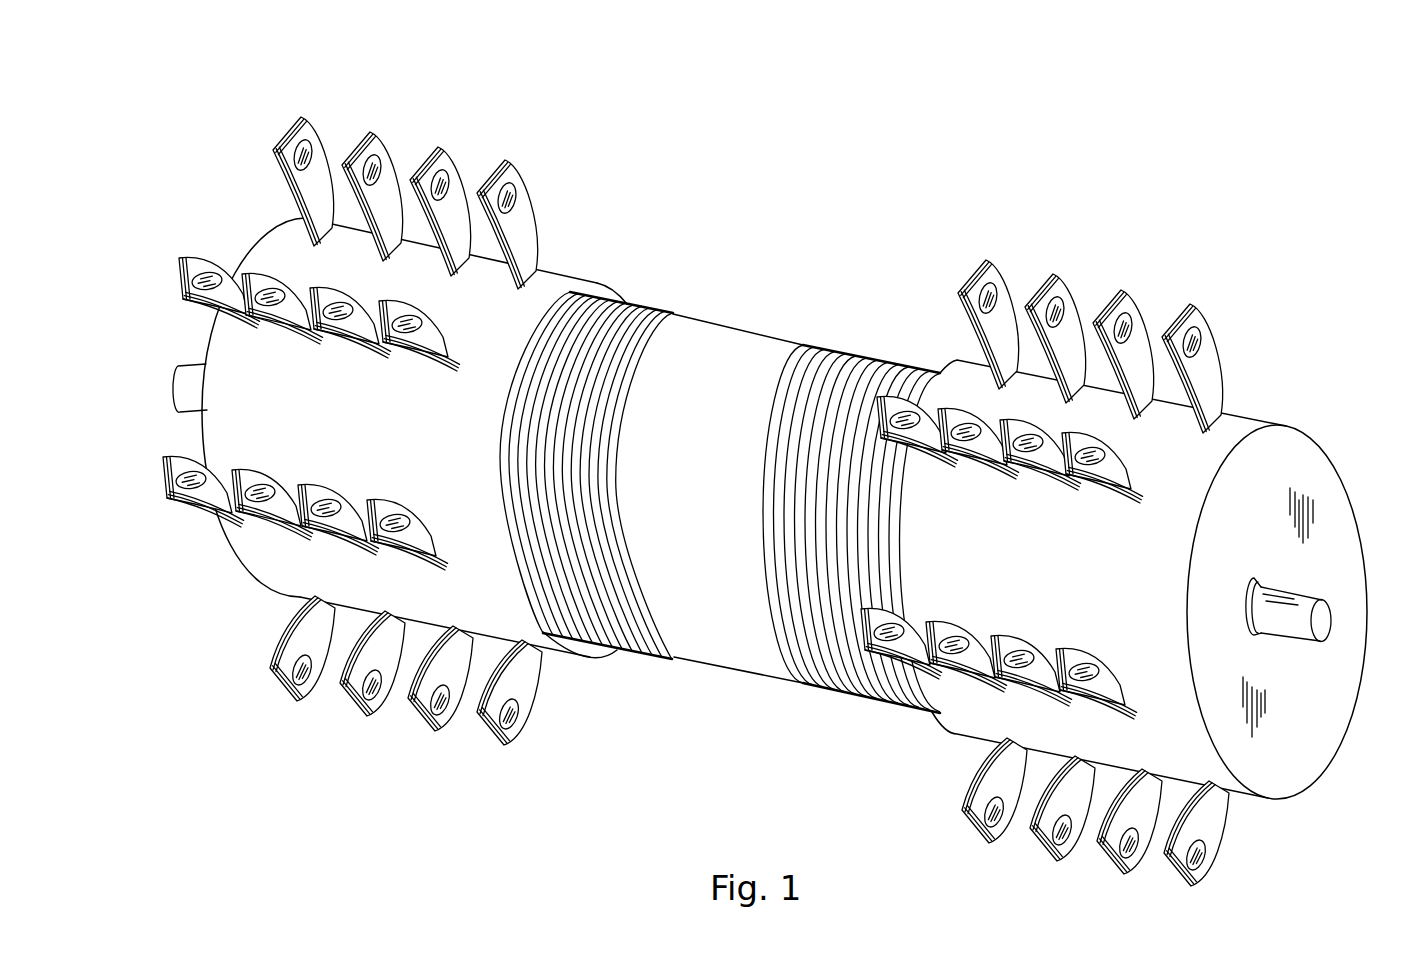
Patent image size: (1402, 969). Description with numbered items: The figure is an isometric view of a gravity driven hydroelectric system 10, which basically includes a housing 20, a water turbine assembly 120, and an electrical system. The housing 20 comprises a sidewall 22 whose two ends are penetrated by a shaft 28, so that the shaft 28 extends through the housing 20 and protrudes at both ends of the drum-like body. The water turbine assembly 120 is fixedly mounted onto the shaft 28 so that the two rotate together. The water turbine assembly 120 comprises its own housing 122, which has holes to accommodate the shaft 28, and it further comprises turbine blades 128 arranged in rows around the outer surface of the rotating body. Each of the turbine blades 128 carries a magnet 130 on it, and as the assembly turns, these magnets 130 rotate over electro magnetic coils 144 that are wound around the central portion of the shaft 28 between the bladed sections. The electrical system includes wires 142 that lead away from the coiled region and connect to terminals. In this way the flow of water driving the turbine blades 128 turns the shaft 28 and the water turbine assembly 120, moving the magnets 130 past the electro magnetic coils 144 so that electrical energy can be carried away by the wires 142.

The gravity driven hydroelectric system 10 is at (765, 482).
The housing 20 is at (784, 508).
The sidewall 22 is at (747, 640).
The shaft 28 is at (192, 364).
The water turbine assembly 120 is at (1149, 526).
The housing 122 is at (1243, 425).
The turbine blades 128 is at (305, 137).
The magnets 130 is at (372, 168).
The wires 142 is at (720, 426).
The electro magnetic coils 144 is at (643, 300).